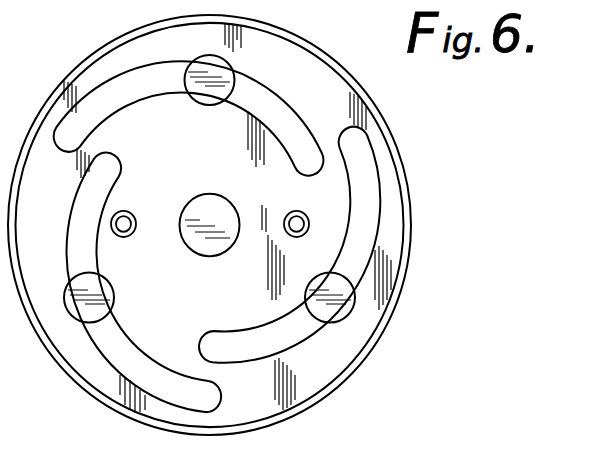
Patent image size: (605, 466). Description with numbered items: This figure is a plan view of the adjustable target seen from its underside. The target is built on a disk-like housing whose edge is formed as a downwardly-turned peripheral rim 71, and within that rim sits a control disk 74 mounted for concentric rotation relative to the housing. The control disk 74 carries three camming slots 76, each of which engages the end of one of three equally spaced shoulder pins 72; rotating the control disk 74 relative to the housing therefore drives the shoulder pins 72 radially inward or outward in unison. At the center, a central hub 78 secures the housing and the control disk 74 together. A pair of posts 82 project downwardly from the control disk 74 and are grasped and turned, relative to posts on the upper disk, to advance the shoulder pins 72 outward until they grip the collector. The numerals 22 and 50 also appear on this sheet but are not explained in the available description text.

The cam plate 71 is at (414, 204).
The peripheral rim 74 is at (340, 101).
The arcuate slots 76 is at (68, 88).
The balls 72 is at (218, 78).
The central bore 78 is at (202, 200).
The mounting holes 82 is at (132, 212).
The shaft 22 is at (21, 448).
The housing 50 is at (267, 461).